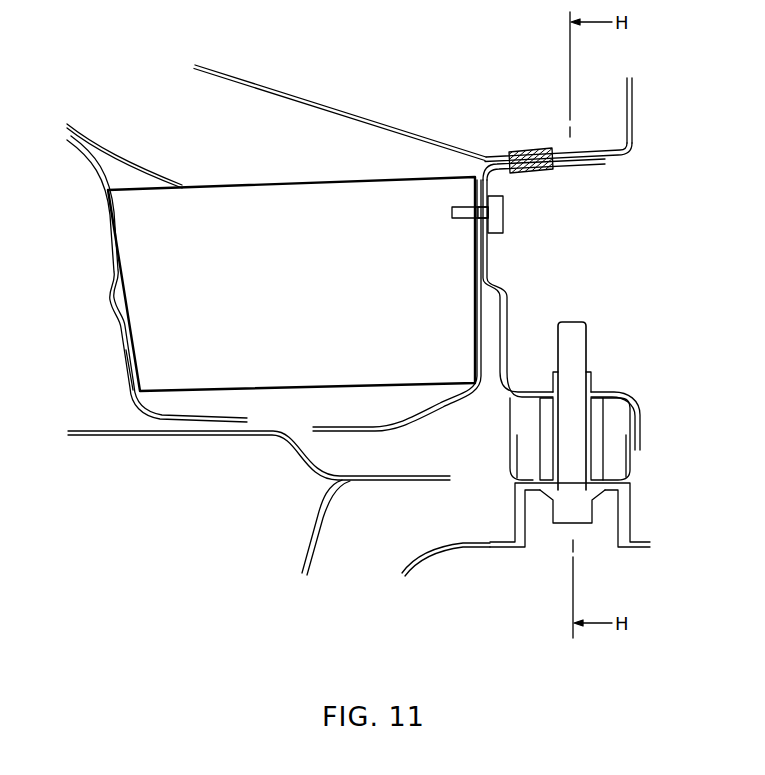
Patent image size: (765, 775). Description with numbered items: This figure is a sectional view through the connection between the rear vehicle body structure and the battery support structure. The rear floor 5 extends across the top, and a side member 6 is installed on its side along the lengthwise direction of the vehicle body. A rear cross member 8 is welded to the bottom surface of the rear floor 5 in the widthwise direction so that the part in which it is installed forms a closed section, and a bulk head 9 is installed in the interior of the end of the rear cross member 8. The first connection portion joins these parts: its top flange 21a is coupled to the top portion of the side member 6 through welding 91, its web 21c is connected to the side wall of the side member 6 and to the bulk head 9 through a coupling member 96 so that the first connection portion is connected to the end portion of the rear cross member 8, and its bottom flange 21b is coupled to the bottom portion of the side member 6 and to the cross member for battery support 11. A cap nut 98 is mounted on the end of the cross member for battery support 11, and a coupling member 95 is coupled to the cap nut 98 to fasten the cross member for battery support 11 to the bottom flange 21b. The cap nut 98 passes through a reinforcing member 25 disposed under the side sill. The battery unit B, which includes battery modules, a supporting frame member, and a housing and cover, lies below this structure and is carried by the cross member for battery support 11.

The rear floor 5 is at (343, 110).
The side member 6 is at (633, 113).
The rear cross member 8 is at (128, 388).
The bulk head 9 is at (279, 398).
The cross member for battery support 11 is at (465, 548).
The top flange of the first connection portion 21a is at (600, 160).
The bottom flange of the first connection portion 21b is at (598, 392).
The web of the first connection portion 21c is at (490, 264).
The reinforcing member 25 is at (503, 464).
The welding 91 is at (532, 150).
The coupling member 95 is at (552, 513).
The coupling member 96 is at (504, 212).
The cap nut 98 is at (631, 518).
The battery unit B is at (313, 545).